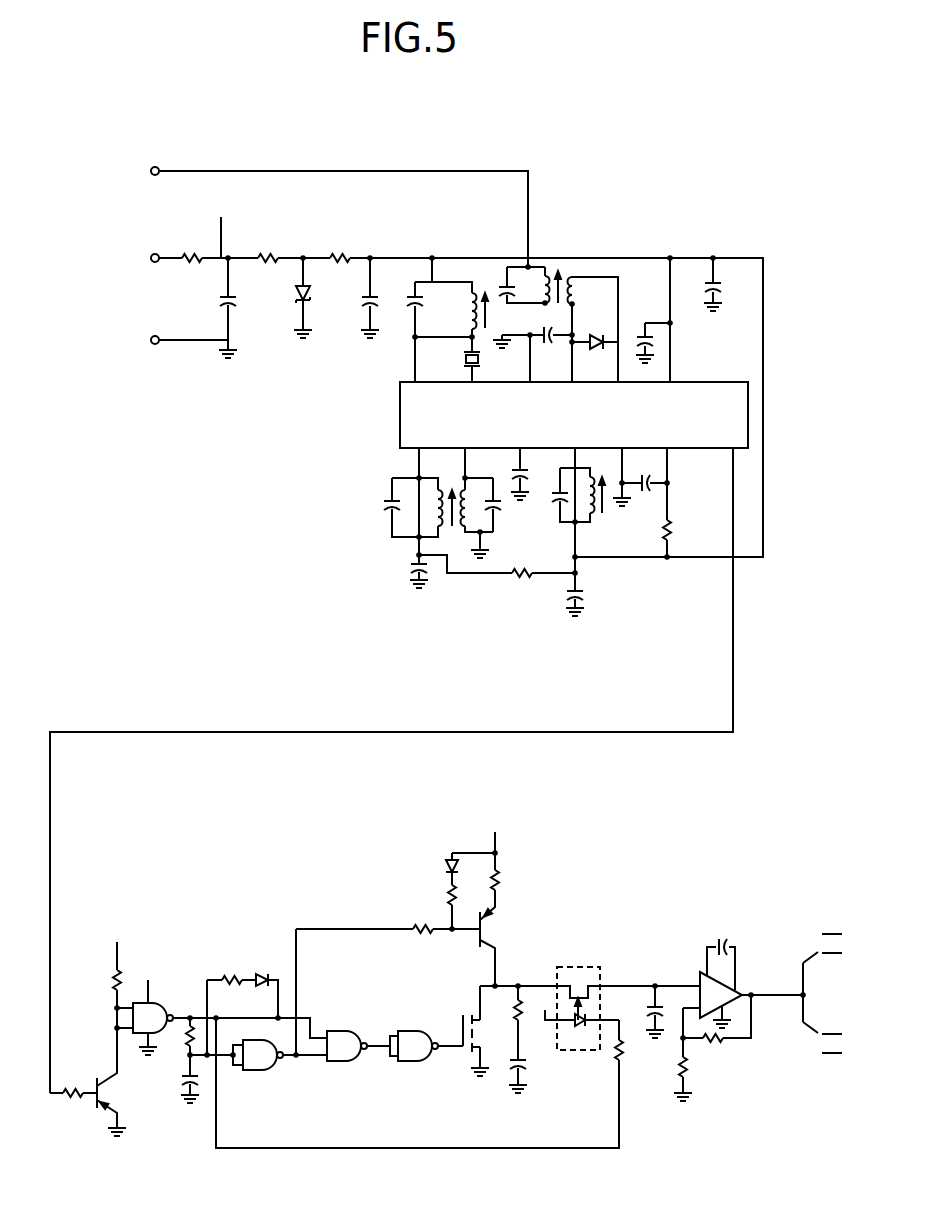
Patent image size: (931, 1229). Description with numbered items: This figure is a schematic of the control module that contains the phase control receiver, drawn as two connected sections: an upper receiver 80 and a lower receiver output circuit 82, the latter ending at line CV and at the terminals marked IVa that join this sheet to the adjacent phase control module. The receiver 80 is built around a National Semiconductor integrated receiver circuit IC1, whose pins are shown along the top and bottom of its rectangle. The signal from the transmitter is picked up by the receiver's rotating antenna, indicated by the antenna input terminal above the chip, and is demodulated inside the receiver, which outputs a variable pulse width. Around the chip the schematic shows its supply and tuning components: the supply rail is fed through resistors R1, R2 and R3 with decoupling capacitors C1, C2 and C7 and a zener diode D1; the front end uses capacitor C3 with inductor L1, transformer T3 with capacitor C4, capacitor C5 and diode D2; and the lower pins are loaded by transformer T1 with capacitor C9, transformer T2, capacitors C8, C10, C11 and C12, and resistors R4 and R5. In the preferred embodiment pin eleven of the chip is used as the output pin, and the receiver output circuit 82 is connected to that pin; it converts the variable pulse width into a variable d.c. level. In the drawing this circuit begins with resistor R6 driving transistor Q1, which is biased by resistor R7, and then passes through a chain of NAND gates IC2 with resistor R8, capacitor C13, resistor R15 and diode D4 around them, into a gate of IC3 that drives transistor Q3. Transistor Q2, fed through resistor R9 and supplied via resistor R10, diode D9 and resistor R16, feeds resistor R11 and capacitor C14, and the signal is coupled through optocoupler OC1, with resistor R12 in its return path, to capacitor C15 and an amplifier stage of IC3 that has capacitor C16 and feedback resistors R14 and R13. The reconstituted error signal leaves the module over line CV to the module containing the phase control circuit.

The receiver 80 is at (650, 226).
The receiver output circuit 82 is at (605, 880).
The resistor R1 is at (191, 240).
The resistor R2 is at (269, 240).
The resistor R3 is at (341, 239).
The capacitor C1 is at (241, 308).
The zener diode D1 is at (315, 298).
The capacitor C2 is at (381, 298).
The capacitor C3 is at (425, 293).
The inductor L1 is at (469, 310).
The transformer T3 is at (562, 324).
The capacitor C4 is at (576, 312).
The diode D2 is at (595, 333).
The capacitor C5 is at (532, 345).
The capacitor C7 is at (726, 284).
The integrated circuit LM1872 IC1 is at (574, 419).
The transformer T1 is at (438, 503).
The capacitor C9 is at (502, 505).
The capacitor C8 is at (409, 571).
The resistor R4 is at (497, 562).
The capacitor C11 is at (594, 594).
The capacitor C10 is at (538, 474).
The transformer T2 is at (583, 491).
The capacitor C12 is at (647, 476).
The resistor R5 is at (688, 502).
The resistor R6 is at (73, 1083).
The transistor Q1 is at (121, 1063).
The resistor R7 is at (118, 963).
The NAND gate IC IC2 is at (253, 999).
The resistor R8 is at (198, 1037).
The capacitor C13 is at (176, 1079).
The resistor R15 is at (231, 1004).
The diode D4 is at (269, 986).
The resistor R12 is at (439, 1083).
The integrated circuit IC3 is at (596, 1004).
The MOSFET transistor Q3 is at (469, 1031).
The resistor R9 is at (388, 918).
The transistor Q2 is at (503, 938).
The resistor R10 is at (515, 858).
The diode D9 is at (470, 869).
The resistor R16 is at (471, 907).
The optocoupler OC1 is at (574, 995).
The resistor R11 is at (506, 1023).
The capacitor C14 is at (533, 1065).
The capacitor C15 is at (643, 1012).
The capacitor C16 is at (729, 935).
The resistor R14 is at (717, 1018).
The resistor R13 is at (701, 1069).